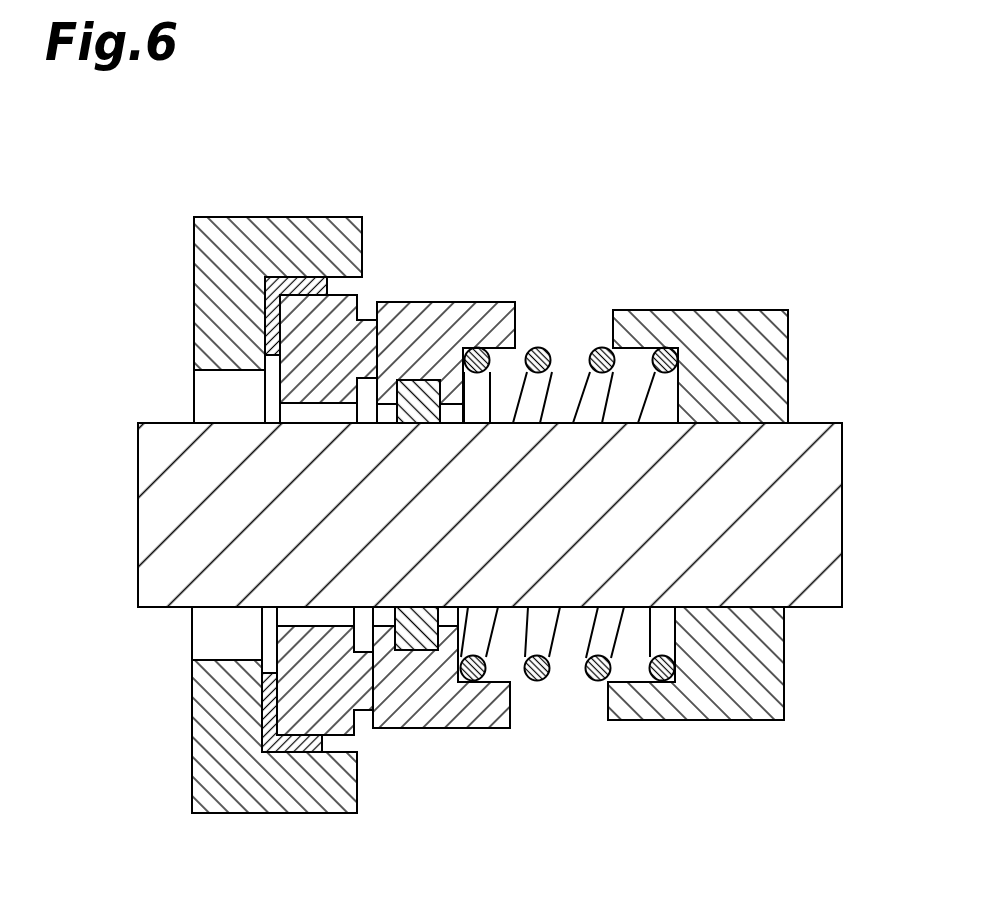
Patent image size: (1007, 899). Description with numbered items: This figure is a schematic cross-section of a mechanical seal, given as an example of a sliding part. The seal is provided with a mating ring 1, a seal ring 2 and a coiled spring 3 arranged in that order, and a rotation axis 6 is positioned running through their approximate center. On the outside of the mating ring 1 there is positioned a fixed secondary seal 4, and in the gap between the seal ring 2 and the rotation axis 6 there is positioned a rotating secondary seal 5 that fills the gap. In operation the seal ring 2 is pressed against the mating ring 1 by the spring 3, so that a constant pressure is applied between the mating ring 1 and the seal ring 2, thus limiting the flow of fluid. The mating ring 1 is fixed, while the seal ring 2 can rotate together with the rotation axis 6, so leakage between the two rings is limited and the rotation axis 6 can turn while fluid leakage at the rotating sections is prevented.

The mating ring 1 is at (310, 717).
The seal ring 2 is at (432, 715).
The spring 3 is at (530, 680).
The fixed secondary seal 4 is at (291, 287).
The rotating secondary seal 5 is at (418, 390).
The rotation axis 6 is at (826, 512).